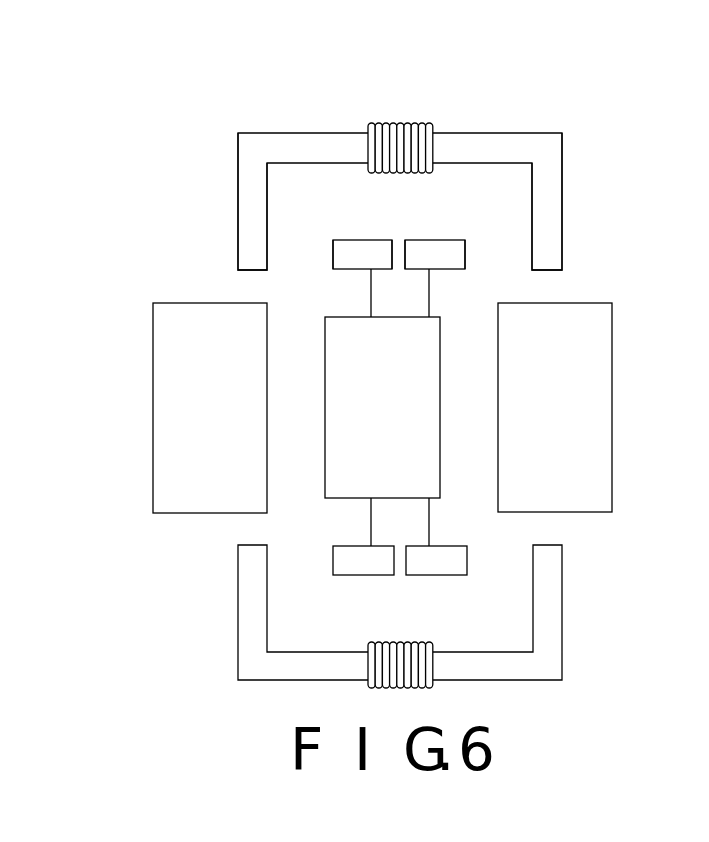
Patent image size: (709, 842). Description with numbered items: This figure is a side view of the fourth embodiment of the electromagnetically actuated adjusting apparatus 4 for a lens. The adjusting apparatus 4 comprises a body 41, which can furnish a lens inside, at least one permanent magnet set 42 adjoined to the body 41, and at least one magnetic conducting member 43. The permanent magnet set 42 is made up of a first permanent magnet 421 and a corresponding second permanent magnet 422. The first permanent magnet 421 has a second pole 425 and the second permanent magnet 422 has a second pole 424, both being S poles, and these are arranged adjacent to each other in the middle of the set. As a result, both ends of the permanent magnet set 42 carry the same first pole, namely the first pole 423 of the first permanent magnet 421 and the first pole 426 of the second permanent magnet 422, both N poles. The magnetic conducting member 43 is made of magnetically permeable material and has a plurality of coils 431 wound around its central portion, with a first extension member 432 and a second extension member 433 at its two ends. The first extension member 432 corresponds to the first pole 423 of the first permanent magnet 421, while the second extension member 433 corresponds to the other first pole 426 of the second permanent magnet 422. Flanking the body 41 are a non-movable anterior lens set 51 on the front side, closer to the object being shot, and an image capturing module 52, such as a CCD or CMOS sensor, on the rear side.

The electromagnetically actuated adjusting apparatus 4 is at (590, 187).
The body 41 is at (333, 483).
The permanent magnet set 42 is at (268, 58).
The first permanent magnet 421 is at (350, 248).
The second permanent magnet 422 is at (448, 248).
The first pole 423 is at (333, 240).
The second pole 424 is at (403, 269).
The second pole 425 is at (397, 269).
The first pole 426 is at (465, 254).
The magnetic conducting member 43 is at (188, 176).
The coils 431 is at (413, 171).
The first extension member 432 is at (245, 160).
The second extension member 433 is at (553, 256).
The anterior lens set 51 is at (162, 412).
The image capturing module 52 is at (598, 408).